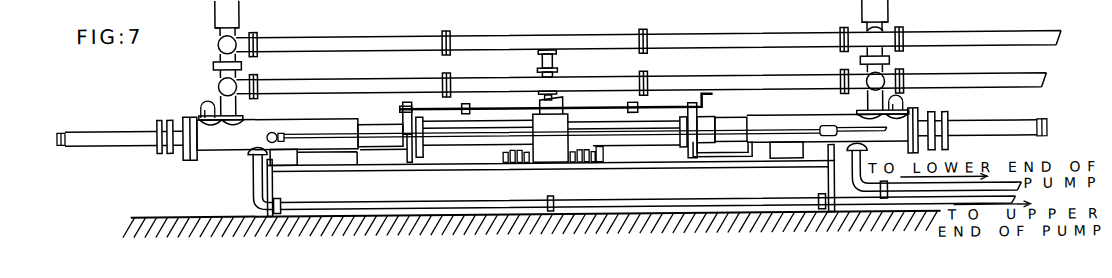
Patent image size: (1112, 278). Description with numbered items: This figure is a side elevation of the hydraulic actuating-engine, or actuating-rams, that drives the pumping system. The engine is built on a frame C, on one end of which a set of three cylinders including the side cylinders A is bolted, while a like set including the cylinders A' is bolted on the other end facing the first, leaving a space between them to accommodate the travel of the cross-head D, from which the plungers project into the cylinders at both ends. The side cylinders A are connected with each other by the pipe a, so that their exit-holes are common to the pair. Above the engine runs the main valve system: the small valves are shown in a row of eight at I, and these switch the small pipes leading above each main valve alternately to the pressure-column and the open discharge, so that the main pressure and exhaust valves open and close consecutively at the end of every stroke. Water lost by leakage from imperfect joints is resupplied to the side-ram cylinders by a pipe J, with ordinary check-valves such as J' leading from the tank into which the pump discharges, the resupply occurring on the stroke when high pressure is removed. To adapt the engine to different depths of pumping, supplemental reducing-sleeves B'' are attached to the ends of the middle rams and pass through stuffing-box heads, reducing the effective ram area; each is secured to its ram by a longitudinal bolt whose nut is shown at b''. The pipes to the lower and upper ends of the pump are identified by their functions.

The cylinder A is at (280, 137).
The cylinder A' is at (847, 131).
The supplemental reducing-sleeve B'' is at (551, 120).
The nut b'' is at (552, 136).
The pipe a is at (201, 109).
The pipe J is at (585, 123).
The check-valve J' is at (665, 28).
The cross-head D is at (550, 106).
The nest of eight small valves I is at (555, 155).
The frame C is at (635, 178).